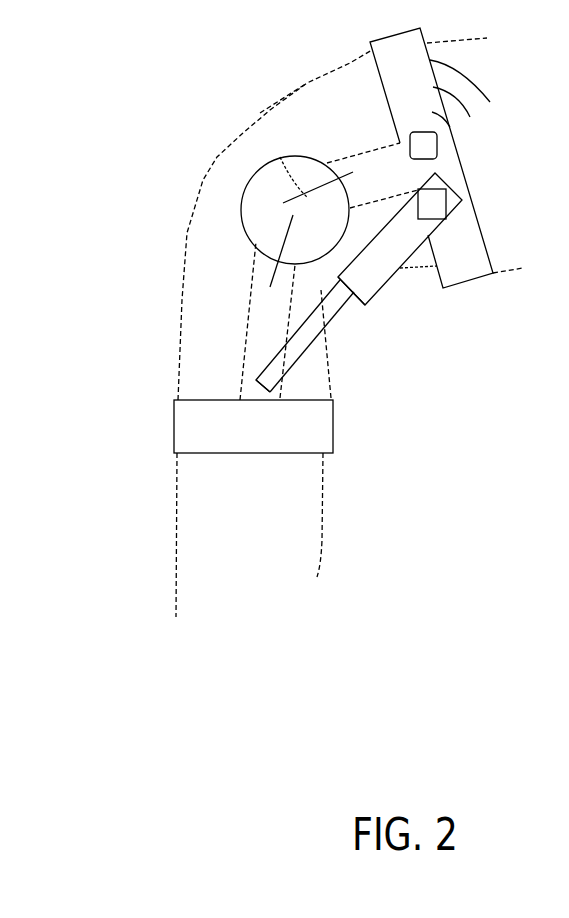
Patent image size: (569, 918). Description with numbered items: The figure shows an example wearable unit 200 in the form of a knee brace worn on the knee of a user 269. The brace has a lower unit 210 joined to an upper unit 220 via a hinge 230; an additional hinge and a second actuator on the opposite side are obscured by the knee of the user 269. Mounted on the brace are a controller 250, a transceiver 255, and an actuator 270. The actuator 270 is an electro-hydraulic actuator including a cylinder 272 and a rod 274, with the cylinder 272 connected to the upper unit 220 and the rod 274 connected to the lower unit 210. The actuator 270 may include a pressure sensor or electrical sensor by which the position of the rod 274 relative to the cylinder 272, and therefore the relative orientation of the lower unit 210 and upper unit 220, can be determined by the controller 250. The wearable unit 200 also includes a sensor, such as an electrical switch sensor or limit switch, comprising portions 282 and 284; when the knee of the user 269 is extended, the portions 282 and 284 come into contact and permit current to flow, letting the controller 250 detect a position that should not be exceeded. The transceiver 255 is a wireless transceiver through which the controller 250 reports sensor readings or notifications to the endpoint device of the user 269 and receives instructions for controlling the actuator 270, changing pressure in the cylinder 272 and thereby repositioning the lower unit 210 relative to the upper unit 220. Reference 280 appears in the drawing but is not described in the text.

The wearable unit 200 is at (173, 428).
The lower unit 210 is at (264, 437).
The upper unit 220 is at (474, 258).
The hinge 230 is at (252, 180).
The controller 250 is at (447, 200).
The transceiver 255 is at (438, 143).
The user 269 is at (337, 125).
The actuator 270 is at (375, 294).
The cylinder 272 is at (412, 268).
The rod 274 is at (308, 345).
The body outline 280 is at (284, 219).
The sensor portion 282 is at (258, 246).
The sensor portion 284 is at (280, 157).